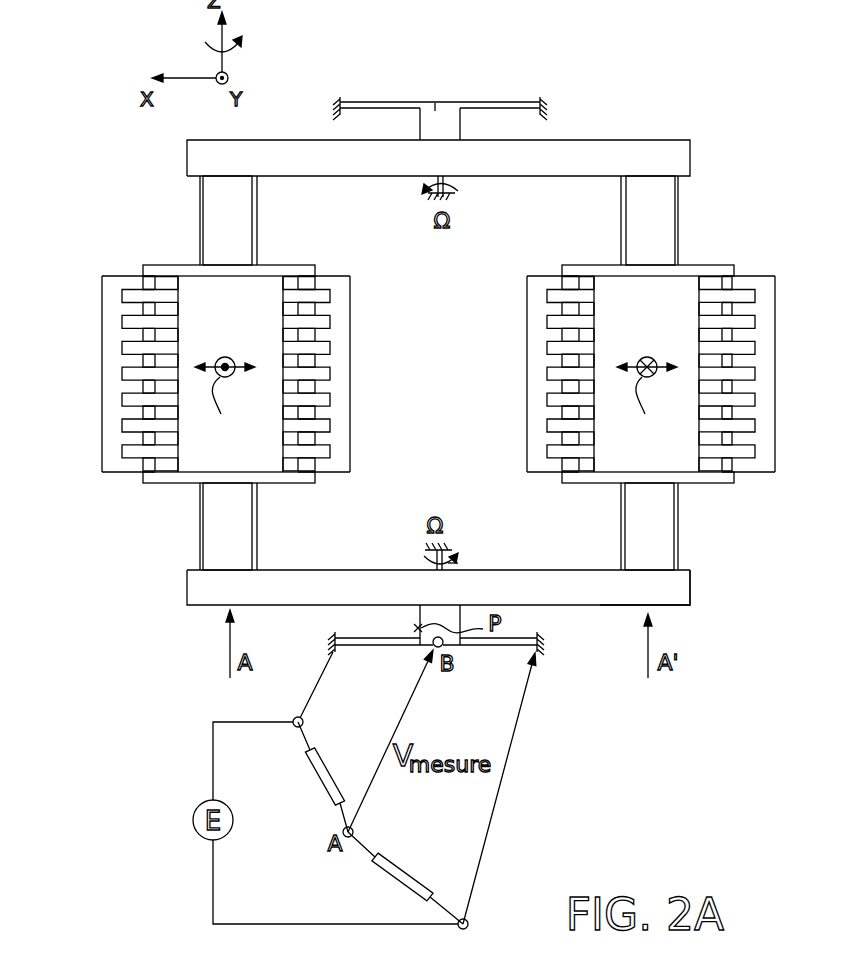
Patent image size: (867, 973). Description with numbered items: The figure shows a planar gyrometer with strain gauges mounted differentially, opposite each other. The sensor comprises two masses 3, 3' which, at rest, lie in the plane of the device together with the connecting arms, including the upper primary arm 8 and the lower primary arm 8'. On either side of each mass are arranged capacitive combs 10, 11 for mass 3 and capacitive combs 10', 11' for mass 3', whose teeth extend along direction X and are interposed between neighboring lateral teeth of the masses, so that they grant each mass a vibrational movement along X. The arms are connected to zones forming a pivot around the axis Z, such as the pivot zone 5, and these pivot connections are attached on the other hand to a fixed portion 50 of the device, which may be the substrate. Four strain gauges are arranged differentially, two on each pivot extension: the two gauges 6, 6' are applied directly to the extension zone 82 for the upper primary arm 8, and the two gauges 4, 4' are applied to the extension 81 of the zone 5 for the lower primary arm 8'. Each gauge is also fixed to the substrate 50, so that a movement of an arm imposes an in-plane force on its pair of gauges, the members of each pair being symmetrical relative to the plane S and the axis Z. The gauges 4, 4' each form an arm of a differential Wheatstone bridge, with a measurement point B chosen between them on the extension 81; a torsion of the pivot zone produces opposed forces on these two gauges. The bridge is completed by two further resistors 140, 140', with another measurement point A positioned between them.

The mass 3 is at (229, 353).
The mass 3' is at (650, 348).
The strain gauge 4 is at (384, 675).
The strain gauge 4' is at (490, 674).
The zone forming a pivot 5 is at (455, 563).
The strain gauge 6 is at (390, 91).
The strain gauge 6' is at (490, 91).
The upper primary arm 8 is at (438, 359).
The lower primary arm 8' is at (655, 628).
The capacitive comb 10 is at (104, 374).
The capacitive comb 10' is at (525, 374).
The capacitive comb 11 is at (350, 374).
The capacitive comb 11' is at (774, 374).
The fixed portion 50 is at (336, 94).
The extension 81 is at (445, 648).
The extension zone 82 is at (437, 101).
The resistor 140 is at (291, 777).
The resistor 140' is at (387, 878).